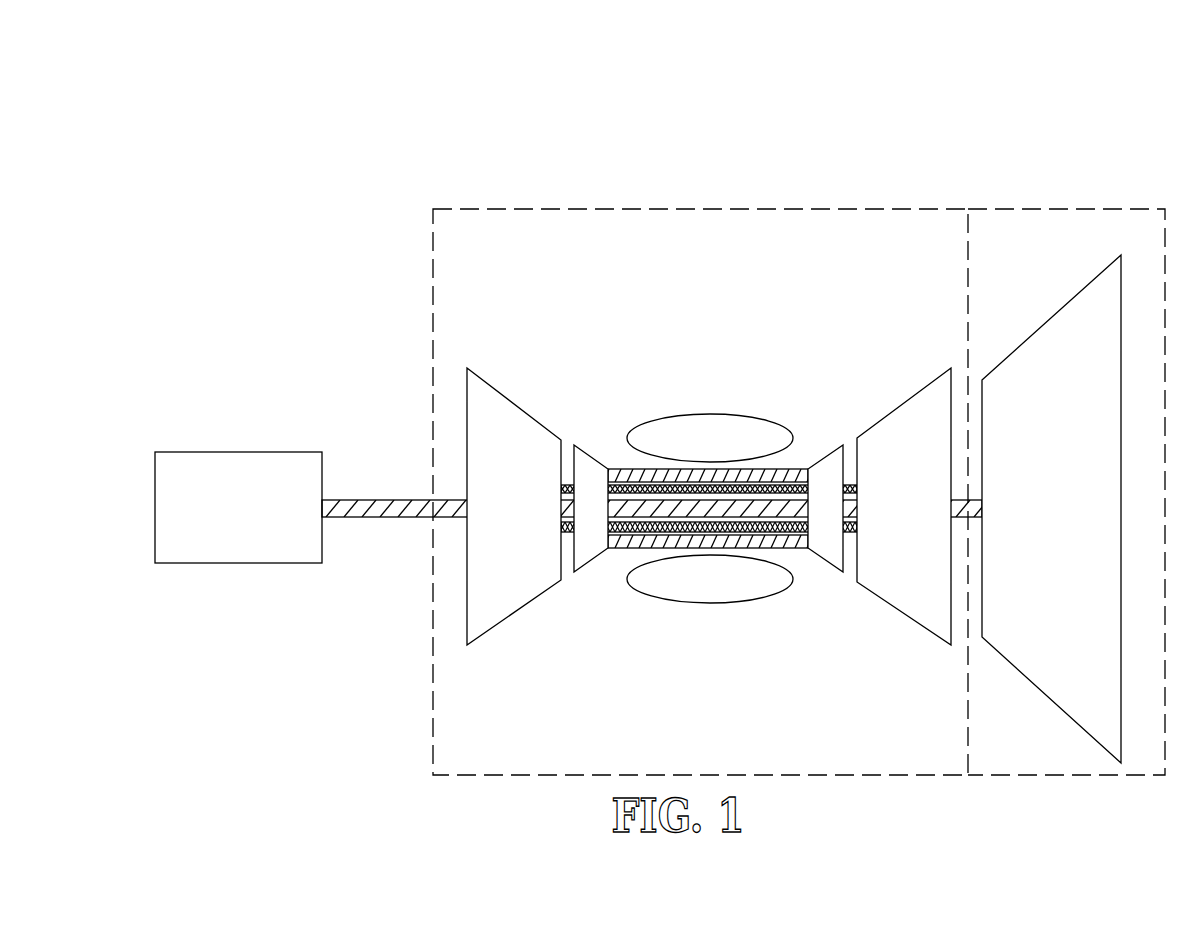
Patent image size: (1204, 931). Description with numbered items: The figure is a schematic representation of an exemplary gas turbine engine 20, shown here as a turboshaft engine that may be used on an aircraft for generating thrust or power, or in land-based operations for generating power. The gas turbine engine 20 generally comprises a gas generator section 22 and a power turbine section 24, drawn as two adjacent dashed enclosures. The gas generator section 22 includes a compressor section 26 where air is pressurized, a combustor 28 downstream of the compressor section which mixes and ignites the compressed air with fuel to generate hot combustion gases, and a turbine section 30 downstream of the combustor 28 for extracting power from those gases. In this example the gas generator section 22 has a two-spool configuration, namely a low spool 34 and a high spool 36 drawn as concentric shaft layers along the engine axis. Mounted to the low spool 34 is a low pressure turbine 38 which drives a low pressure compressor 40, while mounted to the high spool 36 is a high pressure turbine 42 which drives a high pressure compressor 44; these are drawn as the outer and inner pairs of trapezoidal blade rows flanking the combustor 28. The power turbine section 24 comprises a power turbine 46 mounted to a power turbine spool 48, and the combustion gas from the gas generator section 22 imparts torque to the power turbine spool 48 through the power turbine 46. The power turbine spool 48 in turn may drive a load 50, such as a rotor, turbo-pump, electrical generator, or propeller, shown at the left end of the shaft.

The gas turbine engine 20 is at (1045, 108).
The gas generator section 22 is at (743, 209).
The power turbine section 24 is at (1095, 209).
The compressor section 26 is at (559, 606).
The combustor 28 is at (722, 620).
The turbine section 30 is at (848, 606).
The low spool 34 is at (563, 478).
The high spool 36 is at (800, 468).
The low pressure turbine 38 is at (907, 400).
The low pressure compressor 40 is at (517, 405).
The high pressure turbine 42 is at (844, 440).
The high pressure compressor 44 is at (597, 463).
The power turbine 46 is at (1035, 330).
The power turbine spool 48 is at (973, 497).
The load 50 is at (232, 452).